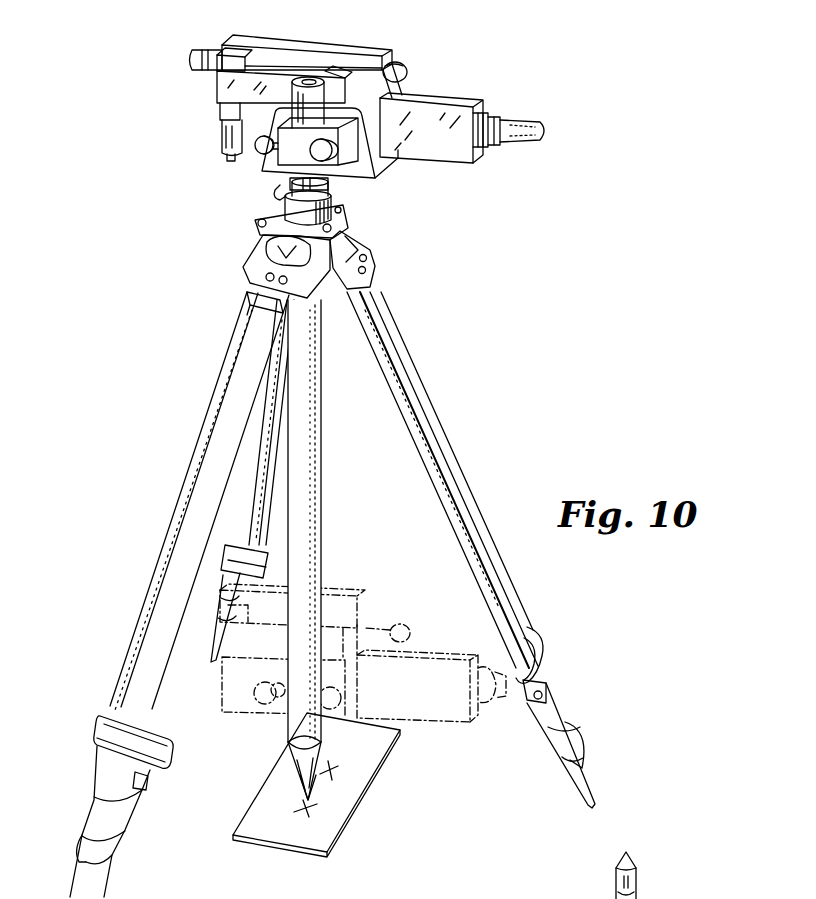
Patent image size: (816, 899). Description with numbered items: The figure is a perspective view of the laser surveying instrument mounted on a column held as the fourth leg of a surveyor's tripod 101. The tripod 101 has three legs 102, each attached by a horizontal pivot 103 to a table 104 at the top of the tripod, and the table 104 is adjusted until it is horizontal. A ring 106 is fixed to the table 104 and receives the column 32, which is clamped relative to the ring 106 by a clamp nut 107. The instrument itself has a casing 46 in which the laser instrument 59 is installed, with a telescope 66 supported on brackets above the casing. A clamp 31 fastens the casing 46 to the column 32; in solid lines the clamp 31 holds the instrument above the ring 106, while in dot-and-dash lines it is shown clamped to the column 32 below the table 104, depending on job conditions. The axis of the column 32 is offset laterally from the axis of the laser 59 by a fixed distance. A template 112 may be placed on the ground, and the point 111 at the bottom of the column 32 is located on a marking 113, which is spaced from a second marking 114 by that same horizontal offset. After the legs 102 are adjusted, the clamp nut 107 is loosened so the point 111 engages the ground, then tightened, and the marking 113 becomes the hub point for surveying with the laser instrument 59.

The clamp 31 is at (252, 171).
The casing 46 is at (410, 115).
The telescope 66 is at (397, 63).
The laser instrument 59 is at (520, 113).
The tripod 101 is at (406, 287).
The legs 102 is at (203, 421).
The horizontal pivot 103 is at (280, 244).
The table 104 is at (345, 228).
The ring 106 is at (333, 197).
The clamp nut 107 is at (273, 197).
The column 32 is at (310, 430).
The point 111 is at (307, 800).
The template 112 is at (333, 846).
The marking 113 is at (315, 808).
The marking 114 is at (336, 771).